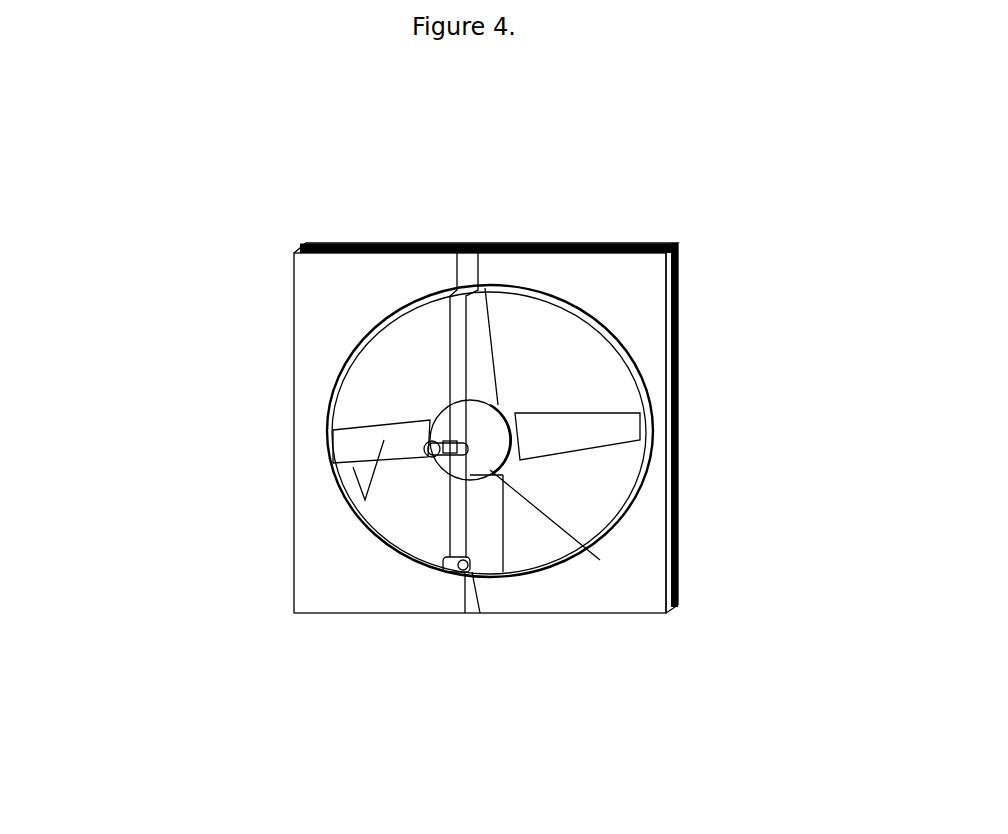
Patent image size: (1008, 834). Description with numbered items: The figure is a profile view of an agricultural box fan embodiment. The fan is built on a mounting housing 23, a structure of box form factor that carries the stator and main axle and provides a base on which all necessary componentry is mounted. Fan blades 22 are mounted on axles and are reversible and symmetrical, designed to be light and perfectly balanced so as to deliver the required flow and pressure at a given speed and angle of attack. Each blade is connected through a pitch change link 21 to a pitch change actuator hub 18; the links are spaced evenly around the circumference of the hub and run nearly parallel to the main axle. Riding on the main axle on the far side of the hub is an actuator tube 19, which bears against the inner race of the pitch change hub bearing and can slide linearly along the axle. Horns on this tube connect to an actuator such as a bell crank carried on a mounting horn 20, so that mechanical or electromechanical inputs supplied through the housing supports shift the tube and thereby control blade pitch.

The pitch change actuator hub 18 is at (562, 572).
The actuator tube 19 is at (478, 447).
The mounting horn 20 is at (468, 572).
The pitch change link 21 is at (510, 468).
The fan blade 22 is at (358, 490).
The mounting housing 23 is at (338, 532).